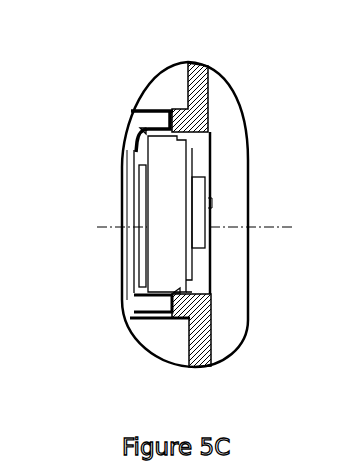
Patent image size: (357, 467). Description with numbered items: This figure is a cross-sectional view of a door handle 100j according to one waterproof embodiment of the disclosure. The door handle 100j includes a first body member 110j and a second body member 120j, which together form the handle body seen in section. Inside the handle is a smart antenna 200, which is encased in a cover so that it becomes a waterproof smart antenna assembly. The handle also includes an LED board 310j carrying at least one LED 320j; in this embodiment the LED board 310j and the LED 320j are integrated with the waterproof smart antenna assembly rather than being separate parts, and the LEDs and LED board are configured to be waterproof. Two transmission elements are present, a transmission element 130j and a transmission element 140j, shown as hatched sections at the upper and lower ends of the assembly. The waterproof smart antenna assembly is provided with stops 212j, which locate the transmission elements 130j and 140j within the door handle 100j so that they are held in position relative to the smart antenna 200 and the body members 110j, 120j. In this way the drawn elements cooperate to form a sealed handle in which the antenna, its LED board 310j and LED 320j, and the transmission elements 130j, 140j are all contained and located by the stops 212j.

The door handle 100j is at (178, 200).
The first body member 110j is at (227, 147).
The second body member 120j is at (128, 132).
The transmission element 130j is at (207, 62).
The transmission element 140j is at (212, 338).
The smart antenna 200 is at (147, 245).
The stops 212j is at (134, 124).
The LED board 310j is at (198, 158).
The LED 320j is at (213, 203).